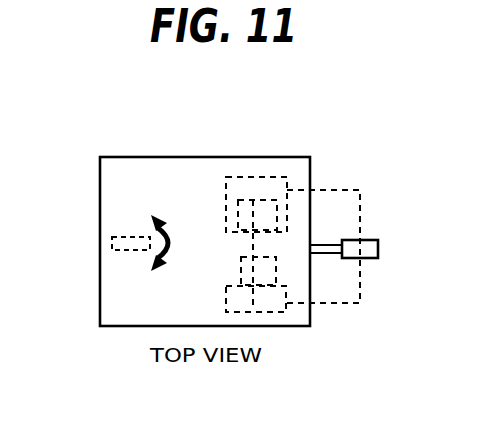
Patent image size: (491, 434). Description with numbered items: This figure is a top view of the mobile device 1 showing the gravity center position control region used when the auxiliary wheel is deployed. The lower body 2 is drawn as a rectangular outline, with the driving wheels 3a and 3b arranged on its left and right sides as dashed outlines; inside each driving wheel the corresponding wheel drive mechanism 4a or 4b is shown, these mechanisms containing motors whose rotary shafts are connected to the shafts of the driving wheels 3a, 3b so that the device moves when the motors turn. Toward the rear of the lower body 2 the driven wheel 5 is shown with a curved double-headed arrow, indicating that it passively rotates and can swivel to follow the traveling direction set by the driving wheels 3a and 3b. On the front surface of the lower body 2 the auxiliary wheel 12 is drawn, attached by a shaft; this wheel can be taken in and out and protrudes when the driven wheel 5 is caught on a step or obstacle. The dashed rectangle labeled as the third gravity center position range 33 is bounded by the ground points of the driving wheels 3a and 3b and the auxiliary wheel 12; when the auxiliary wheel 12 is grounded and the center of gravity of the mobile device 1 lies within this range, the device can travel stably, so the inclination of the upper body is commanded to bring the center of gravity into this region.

The mobile device 1 is at (80, 132).
The lower body 2 is at (146, 157).
The driving wheel 3a is at (272, 177).
The driving wheel 3b is at (273, 313).
The wheel drive mechanism 4a is at (238, 230).
The wheel drive mechanism 4b is at (237, 263).
The driven wheel 5 is at (112, 243).
The auxiliary wheel 12 is at (378, 242).
The third gravity center position range 33 is at (346, 190).